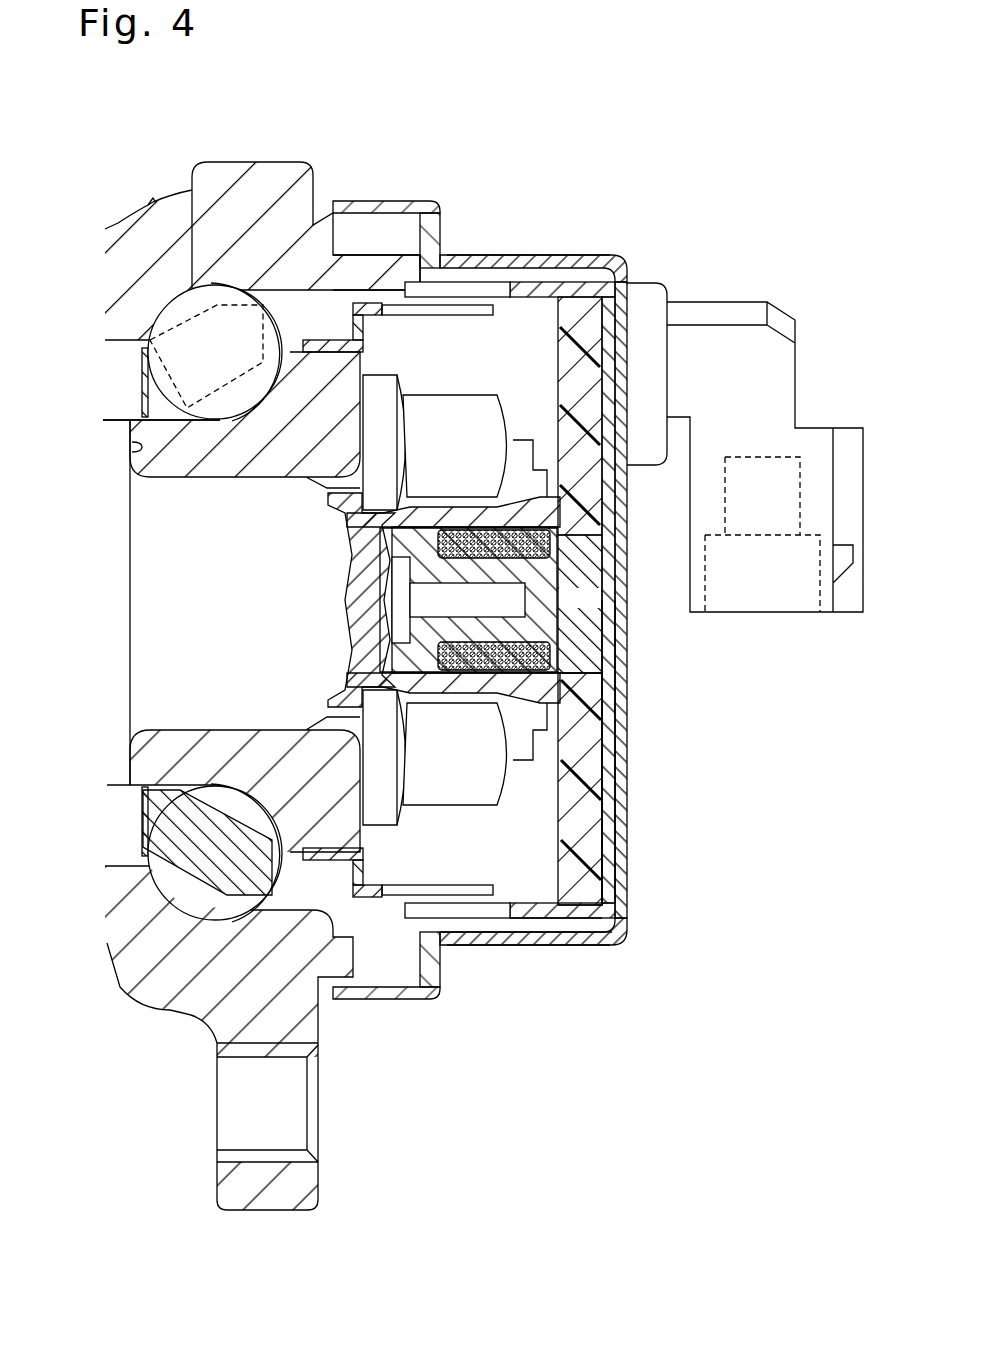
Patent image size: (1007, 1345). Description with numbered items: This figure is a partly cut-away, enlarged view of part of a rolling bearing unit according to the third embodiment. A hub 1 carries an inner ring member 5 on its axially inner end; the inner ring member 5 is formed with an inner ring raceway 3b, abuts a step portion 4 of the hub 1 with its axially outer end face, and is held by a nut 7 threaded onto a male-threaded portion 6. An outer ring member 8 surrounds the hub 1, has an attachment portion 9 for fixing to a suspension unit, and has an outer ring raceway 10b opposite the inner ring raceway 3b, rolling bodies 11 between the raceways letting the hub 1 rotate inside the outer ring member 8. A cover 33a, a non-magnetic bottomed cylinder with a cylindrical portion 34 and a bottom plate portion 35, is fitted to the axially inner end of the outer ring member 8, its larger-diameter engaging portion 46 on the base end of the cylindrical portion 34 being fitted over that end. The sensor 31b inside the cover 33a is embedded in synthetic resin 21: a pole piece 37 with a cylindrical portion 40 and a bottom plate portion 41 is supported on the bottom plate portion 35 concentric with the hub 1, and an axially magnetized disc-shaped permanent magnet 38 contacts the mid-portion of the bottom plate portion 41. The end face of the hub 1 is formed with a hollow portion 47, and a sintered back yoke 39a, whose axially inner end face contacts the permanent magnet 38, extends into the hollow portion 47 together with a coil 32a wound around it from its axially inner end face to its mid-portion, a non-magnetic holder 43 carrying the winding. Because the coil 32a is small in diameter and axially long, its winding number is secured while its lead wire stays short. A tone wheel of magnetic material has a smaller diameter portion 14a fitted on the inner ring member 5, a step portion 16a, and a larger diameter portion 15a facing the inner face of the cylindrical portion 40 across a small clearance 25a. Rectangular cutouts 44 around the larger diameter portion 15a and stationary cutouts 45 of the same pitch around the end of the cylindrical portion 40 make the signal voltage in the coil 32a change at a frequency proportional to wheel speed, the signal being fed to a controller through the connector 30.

The hub 1 is at (150, 683).
The inner ring raceway 3b is at (240, 420).
The step portion 4 is at (138, 447).
The inner ring member 5 is at (135, 750).
The male-threaded portion 6 is at (340, 568).
The nut 7 is at (565, 360).
The outer ring member 8 is at (230, 170).
The attachment portion 9 is at (275, 1212).
The outer ring raceway 10b is at (190, 203).
The rolling bodies 11 is at (175, 385).
The smaller diameter portion 14a is at (318, 317).
The larger diameter portion 15a is at (510, 257).
The step portion 16a is at (365, 948).
The synthetic resin 21 is at (587, 867).
The small clearance 25a is at (395, 297).
The connector 30 is at (793, 390).
The yoke portion 31b is at (597, 657).
The coil 32a is at (513, 675).
The cover 33a is at (670, 320).
The cylindrical portion 34 is at (510, 942).
The bottom plate portion 35 is at (622, 812).
The pole piece 37 is at (612, 757).
The permanent magnet 38 is at (593, 628).
The back yoke 39a is at (360, 650).
The cylindrical portion 40 is at (590, 945).
The bottom plate portion 41 is at (612, 725).
The holder 43 is at (545, 562).
The cutouts 44 is at (477, 283).
The stationary cutouts 45 is at (487, 310).
The engaging portion 46 is at (378, 205).
The hollow portion 47 is at (543, 530).